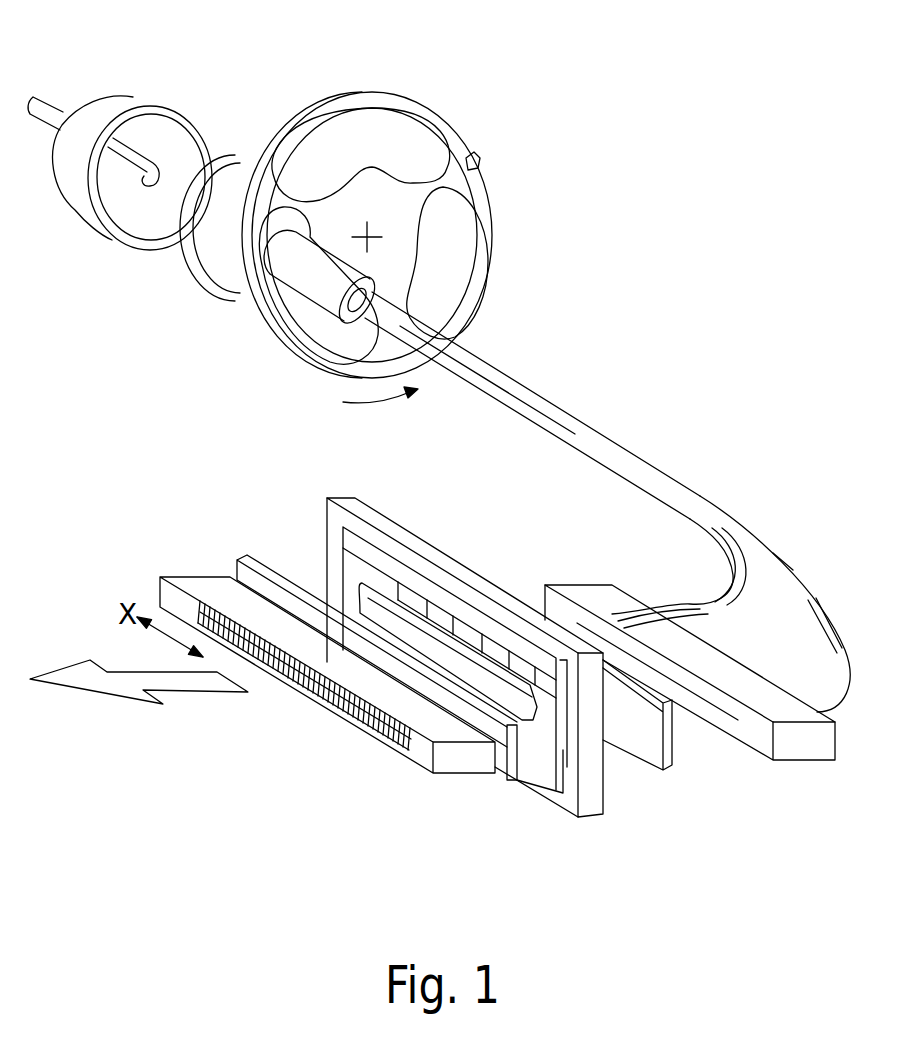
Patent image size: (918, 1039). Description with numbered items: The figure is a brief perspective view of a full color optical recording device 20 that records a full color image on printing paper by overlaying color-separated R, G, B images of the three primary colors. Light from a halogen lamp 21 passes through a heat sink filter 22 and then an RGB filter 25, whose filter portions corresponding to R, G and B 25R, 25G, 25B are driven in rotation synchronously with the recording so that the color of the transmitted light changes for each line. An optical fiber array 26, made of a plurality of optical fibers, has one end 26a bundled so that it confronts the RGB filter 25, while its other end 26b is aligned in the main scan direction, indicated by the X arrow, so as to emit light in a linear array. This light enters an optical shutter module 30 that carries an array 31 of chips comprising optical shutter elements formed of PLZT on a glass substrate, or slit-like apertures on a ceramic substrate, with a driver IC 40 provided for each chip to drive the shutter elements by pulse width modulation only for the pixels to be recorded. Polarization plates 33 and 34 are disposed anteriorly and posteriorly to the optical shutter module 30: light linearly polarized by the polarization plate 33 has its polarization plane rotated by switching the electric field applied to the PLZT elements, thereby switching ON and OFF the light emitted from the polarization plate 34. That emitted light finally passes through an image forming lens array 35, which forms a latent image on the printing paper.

The optical recording device 20 is at (768, 76).
The halogen lamp 21 is at (133, 157).
The heat sink filter 22 is at (182, 273).
The RGB filter 25 is at (413, 101).
The red filter segment 25R is at (370, 127).
The green filter segment 25G is at (447, 295).
The blue filter segment 25B is at (307, 327).
The optical fiber array 26 is at (623, 470).
The one end of optical fiber array 26a is at (275, 280).
The other end of optical fiber array 26b is at (590, 594).
The optical shutter module 30 is at (413, 540).
The array of chips 31 is at (320, 574).
The polarization plate 33 is at (655, 756).
The polarization plate 34 is at (500, 782).
The image forming lens array 35 is at (207, 582).
The driver IC 40 is at (443, 613).